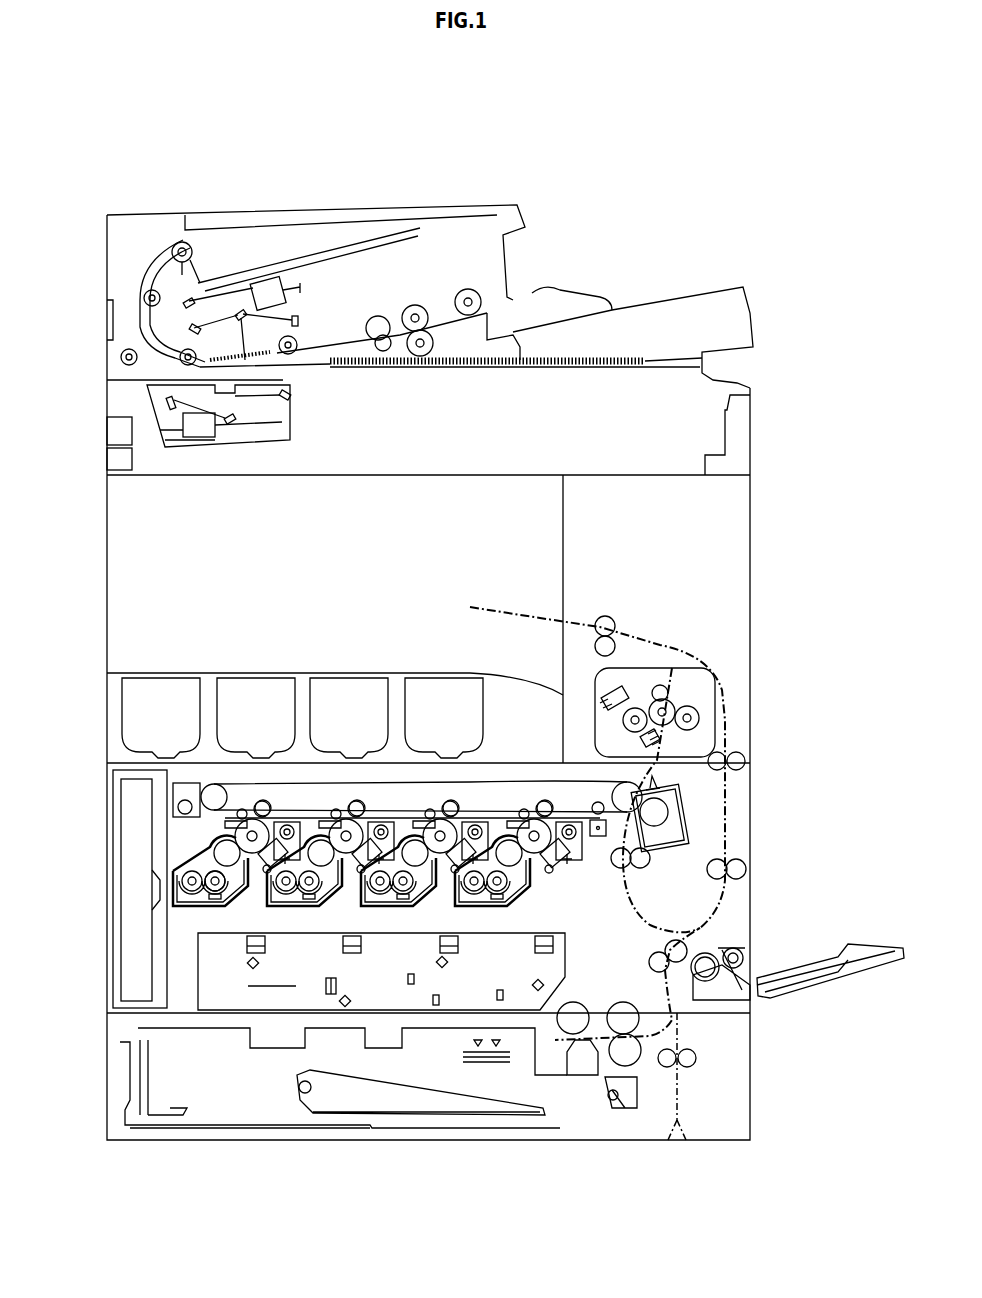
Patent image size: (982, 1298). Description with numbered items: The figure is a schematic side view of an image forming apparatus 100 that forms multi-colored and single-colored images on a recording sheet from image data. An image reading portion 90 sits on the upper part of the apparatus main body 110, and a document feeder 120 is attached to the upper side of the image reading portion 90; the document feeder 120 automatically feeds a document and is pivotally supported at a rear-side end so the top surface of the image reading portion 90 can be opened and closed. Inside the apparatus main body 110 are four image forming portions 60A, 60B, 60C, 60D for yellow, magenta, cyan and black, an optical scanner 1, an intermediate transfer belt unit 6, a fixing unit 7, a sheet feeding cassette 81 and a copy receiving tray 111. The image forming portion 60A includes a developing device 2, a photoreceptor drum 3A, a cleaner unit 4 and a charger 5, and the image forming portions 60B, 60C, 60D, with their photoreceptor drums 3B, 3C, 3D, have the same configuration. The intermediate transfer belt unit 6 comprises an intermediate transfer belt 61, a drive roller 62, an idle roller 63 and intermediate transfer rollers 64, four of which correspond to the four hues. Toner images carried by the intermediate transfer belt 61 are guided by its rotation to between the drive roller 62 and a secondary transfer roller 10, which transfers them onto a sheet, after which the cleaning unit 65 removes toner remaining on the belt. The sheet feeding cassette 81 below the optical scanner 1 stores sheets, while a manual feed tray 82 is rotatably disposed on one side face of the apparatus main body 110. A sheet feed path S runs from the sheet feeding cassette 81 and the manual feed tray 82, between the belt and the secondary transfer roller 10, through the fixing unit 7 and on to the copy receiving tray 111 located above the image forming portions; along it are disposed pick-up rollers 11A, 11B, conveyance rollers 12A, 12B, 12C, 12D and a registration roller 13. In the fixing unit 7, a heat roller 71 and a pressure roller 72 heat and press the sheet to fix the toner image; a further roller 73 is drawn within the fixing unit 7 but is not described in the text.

The image forming apparatus 100 is at (803, 280).
The apparatus main body 110 is at (95, 630).
The copy receiving tray 111 is at (213, 673).
The document feeder 120 is at (104, 214).
The image reading portion 90 is at (750, 437).
The image forming portion 60A is at (197, 835).
The image forming portion 60B is at (314, 812).
The image forming portion 60C is at (402, 812).
The image forming portion 60D is at (498, 812).
The photoreceptor drum 3A is at (251, 820).
The photoreceptor drum 3B is at (345, 820).
The photoreceptor drum 3C is at (439, 820).
The photoreceptor drum 3D is at (533, 820).
The developing device 2 is at (208, 858).
The cleaner unit 4 is at (288, 838).
The charger 5 is at (262, 872).
The intermediate transfer belt unit 6 is at (507, 768).
The intermediate transfer belt 61 is at (535, 782).
The drive roller 62 is at (645, 798).
The idle roller 63 is at (215, 788).
The intermediate transfer roller 64 is at (271, 811).
The cleaning unit 65 is at (190, 782).
The secondary transfer roller 10 is at (662, 813).
The registration roller 13 is at (651, 859).
The conveyance roller 12A is at (688, 950).
The conveyance roller 12B is at (606, 616).
The conveyance roller 12C is at (746, 761).
The conveyance roller 12D is at (746, 869).
The fixing unit 7 is at (716, 690).
The heat roller 71 is at (668, 706).
The pressure roller 72 is at (692, 718).
The fixing belt roller 73 is at (656, 692).
The sheet feed path S is at (633, 913).
The optical scanner 1 is at (566, 951).
The pick-up roller 11A is at (576, 1014).
The pick-up roller 11B is at (746, 953).
The sheet feeding cassette 81 is at (253, 1130).
The manual feed tray 82 is at (845, 946).